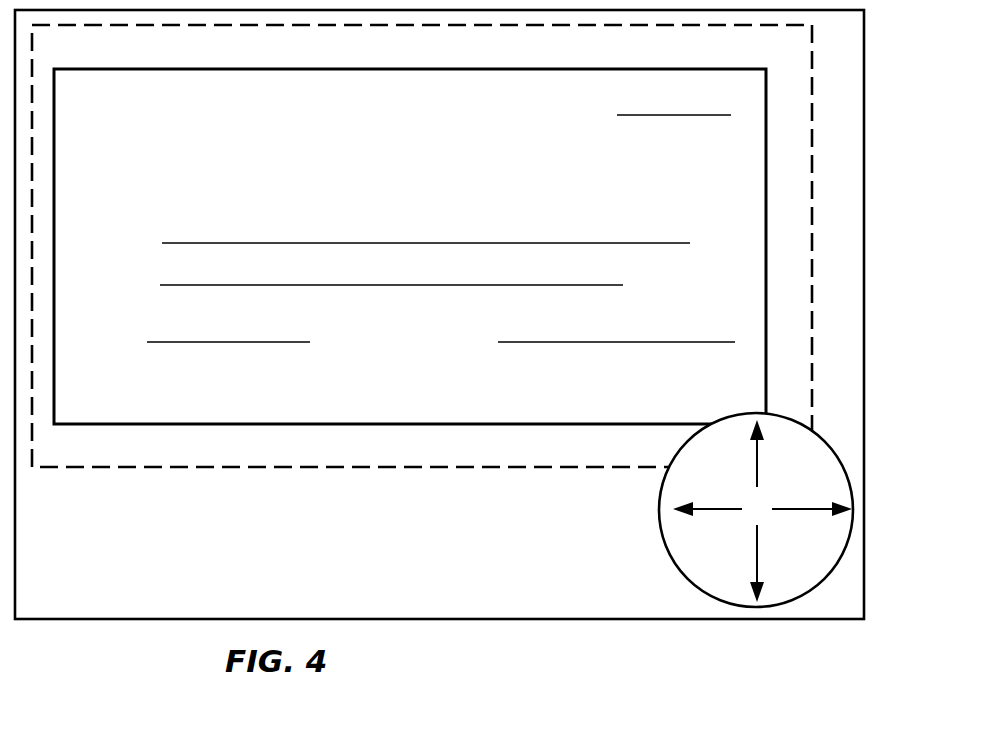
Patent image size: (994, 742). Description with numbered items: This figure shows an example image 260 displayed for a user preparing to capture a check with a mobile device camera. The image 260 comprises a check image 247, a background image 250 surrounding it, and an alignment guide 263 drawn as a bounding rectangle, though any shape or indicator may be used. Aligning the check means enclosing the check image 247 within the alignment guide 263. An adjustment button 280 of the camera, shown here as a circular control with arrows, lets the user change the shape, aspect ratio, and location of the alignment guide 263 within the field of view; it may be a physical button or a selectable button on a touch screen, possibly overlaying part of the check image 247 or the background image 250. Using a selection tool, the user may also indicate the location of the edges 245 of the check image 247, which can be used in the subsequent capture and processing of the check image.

The edges 245 is at (410, 424).
The check image 247 is at (256, 390).
The background image 250 is at (573, 602).
The image 260 is at (440, 619).
The alignment guide 263 is at (113, 467).
The adjustment button 280 is at (730, 603).